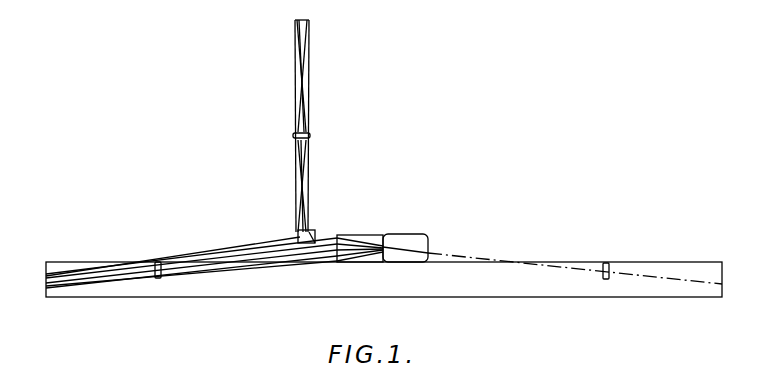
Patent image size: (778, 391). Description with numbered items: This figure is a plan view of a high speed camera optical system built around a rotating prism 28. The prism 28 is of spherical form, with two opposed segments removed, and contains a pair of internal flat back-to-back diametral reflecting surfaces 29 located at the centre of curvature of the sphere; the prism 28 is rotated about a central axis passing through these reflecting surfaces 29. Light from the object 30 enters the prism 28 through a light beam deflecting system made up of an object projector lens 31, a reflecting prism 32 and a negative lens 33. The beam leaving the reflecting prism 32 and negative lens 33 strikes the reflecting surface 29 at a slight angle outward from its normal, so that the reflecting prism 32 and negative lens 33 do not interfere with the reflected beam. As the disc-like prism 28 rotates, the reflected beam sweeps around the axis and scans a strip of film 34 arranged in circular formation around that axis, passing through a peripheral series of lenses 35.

The prism 28 is at (365, 235).
The reflecting surfaces 29 is at (382, 233).
The object 30 is at (307, 21).
The object projector lens 31 is at (293, 135).
The reflecting prism 32 is at (300, 236).
The negative lens 33 is at (313, 237).
The strip of film 34 is at (46, 278).
The peripheral series of lenses 35 is at (158, 262).